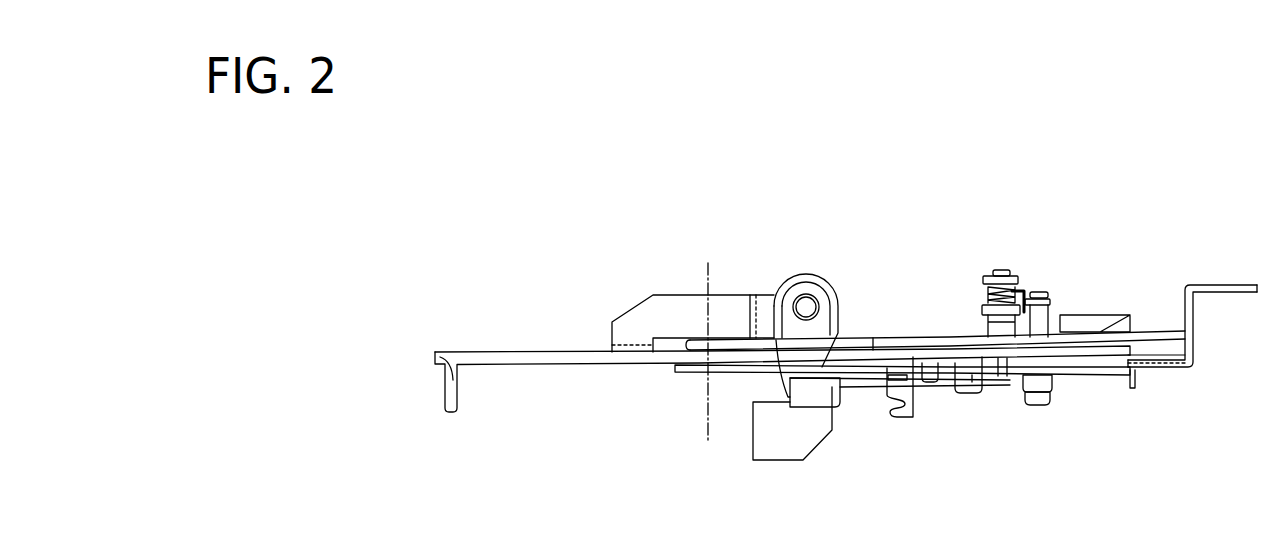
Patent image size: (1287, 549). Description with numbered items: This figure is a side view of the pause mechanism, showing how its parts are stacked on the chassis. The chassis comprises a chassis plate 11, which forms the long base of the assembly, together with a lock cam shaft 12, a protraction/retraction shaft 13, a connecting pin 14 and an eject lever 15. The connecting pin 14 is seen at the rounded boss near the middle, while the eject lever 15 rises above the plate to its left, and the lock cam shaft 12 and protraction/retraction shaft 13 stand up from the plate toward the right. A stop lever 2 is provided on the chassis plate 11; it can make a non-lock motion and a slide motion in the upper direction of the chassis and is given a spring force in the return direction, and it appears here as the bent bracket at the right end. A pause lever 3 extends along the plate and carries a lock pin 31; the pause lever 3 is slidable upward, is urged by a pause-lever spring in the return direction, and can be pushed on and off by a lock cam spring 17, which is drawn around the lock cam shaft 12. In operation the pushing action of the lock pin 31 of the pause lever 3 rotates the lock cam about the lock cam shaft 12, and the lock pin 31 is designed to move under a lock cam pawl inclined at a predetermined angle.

The chassis plate 11 is at (512, 356).
The lock cam shaft 12 is at (975, 338).
The protraction/retraction shaft 13 is at (1045, 291).
The connecting pin 14 is at (803, 303).
The eject lever 15 is at (632, 320).
The stop lever 2 is at (1233, 285).
The pause lever 3 is at (1158, 330).
The lock pin 31 is at (1143, 362).
The lock cam spring 17 is at (995, 320).